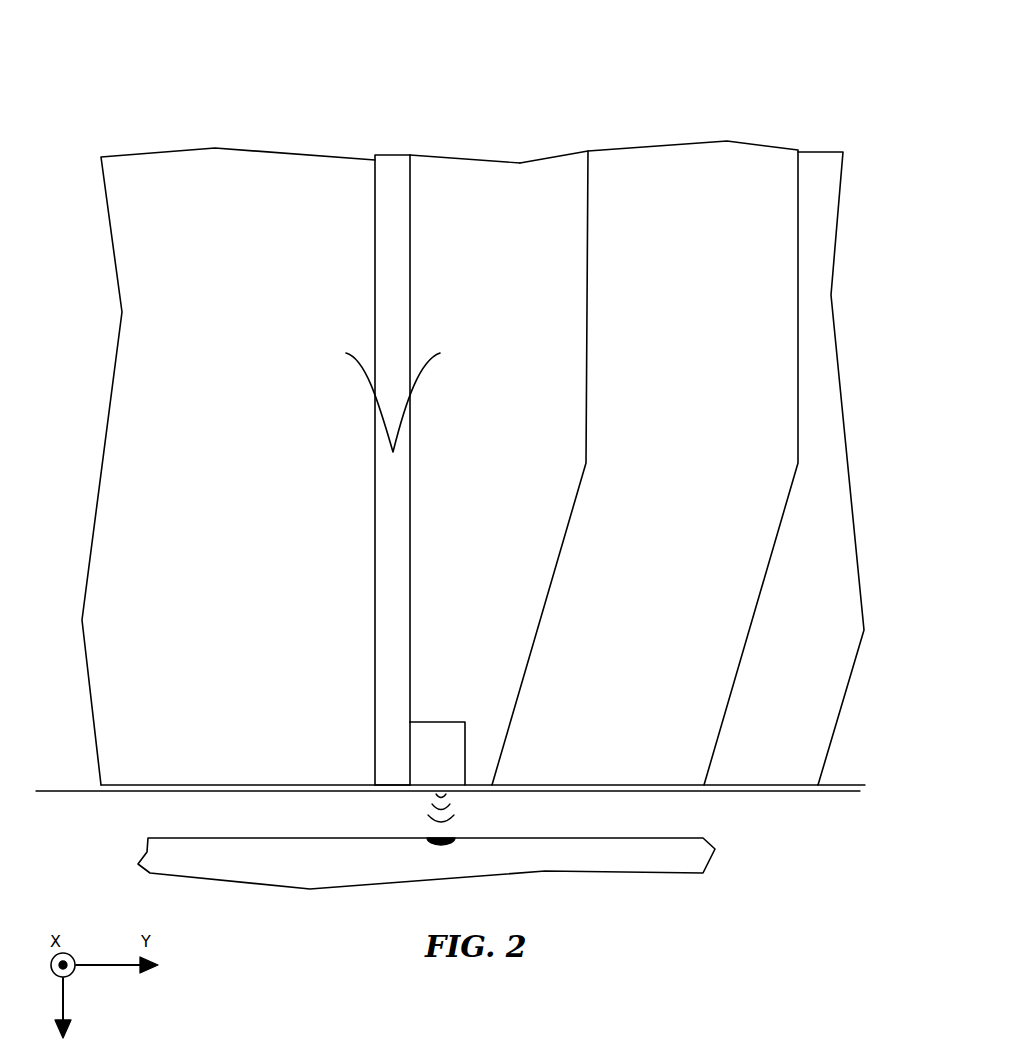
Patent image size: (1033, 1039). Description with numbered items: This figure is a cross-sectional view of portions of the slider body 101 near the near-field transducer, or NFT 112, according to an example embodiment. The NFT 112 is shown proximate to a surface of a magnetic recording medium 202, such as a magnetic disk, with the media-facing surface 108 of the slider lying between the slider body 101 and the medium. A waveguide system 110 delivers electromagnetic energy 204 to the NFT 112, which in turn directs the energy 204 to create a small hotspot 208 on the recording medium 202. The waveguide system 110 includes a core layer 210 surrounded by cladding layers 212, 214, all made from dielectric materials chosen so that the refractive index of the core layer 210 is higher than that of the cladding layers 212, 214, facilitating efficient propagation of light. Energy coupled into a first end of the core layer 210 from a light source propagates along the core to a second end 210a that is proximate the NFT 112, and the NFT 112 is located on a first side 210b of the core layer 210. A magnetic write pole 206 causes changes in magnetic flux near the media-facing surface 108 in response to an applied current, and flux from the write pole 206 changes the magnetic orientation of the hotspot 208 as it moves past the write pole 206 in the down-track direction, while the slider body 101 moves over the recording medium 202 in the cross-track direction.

The slider body 101 is at (729, 68).
The waveguide system 110 is at (580, 112).
The cladding layer 214 is at (237, 151).
The core layer 210 is at (392, 155).
The second end 210a is at (377, 762).
The first side 210b is at (411, 562).
The cladding layer 212 is at (442, 169).
The magnetic write pole 206 is at (708, 142).
The electromagnetic energy 204 is at (362, 371).
The near-field transducer 112 is at (445, 763).
The media-facing surface 108 is at (758, 792).
The magnetic recording medium 202 is at (204, 860).
The hotspot 208 is at (440, 849).